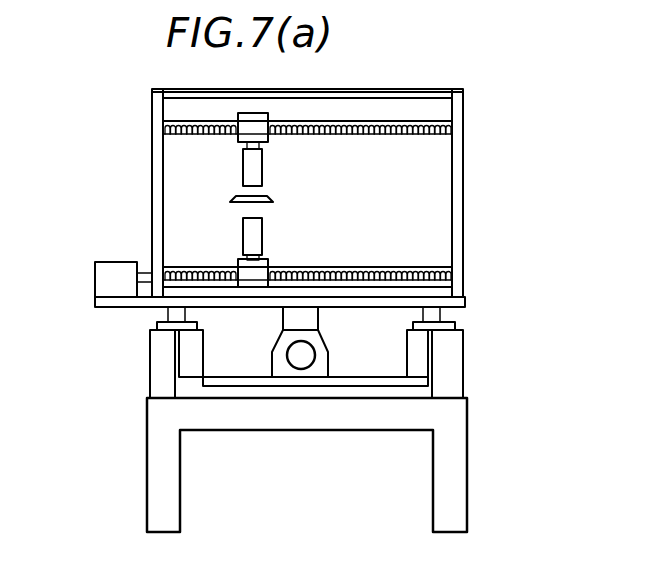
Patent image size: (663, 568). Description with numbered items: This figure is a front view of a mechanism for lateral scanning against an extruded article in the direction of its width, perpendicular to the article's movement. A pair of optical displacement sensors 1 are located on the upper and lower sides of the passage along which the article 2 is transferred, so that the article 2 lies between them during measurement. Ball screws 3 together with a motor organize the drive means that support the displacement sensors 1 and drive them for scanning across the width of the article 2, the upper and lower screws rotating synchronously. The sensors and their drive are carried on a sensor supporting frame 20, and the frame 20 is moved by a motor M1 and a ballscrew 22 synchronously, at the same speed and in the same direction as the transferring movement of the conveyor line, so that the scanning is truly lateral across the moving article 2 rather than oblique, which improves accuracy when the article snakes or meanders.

The optical displacement sensor 1 is at (262, 171).
The article 2 is at (273, 200).
The ball screw 3 is at (328, 200).
The sensor supporting frame 20 is at (455, 178).
The ballscrew 22 is at (298, 362).
The motor M1 is at (108, 264).